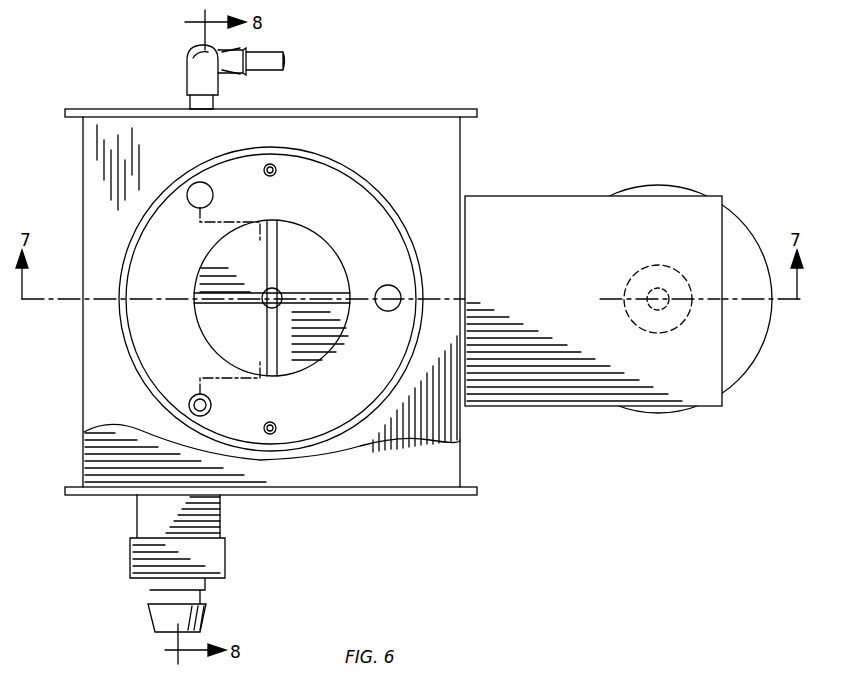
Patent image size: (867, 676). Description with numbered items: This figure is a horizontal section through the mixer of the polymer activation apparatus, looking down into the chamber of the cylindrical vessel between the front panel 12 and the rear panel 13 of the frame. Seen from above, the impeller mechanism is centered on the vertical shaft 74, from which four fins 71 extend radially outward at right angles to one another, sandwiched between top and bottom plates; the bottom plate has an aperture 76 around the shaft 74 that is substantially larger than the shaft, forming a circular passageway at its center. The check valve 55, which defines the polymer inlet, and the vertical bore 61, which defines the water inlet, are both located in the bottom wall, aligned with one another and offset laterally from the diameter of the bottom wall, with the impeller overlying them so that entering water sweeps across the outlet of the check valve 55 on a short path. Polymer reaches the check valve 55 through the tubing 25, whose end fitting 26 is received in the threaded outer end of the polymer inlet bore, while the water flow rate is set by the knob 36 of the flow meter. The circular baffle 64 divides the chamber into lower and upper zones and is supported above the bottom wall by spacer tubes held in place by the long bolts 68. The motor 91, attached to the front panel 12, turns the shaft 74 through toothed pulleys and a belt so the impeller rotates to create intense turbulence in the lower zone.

The front panel 12 is at (440, 108).
The rear panel 13 is at (410, 497).
The tubing 25 is at (268, 55).
The fitting 26 is at (192, 68).
The knob 36 is at (208, 614).
The check valve 55 is at (190, 406).
The vertical bore 61 is at (196, 184).
The baffle 64 is at (450, 473).
The long bolts 68 is at (273, 164).
The fins 71 is at (270, 270).
The shaft 74 is at (265, 293).
The aperture 76 is at (318, 335).
The motor 91 is at (662, 410).